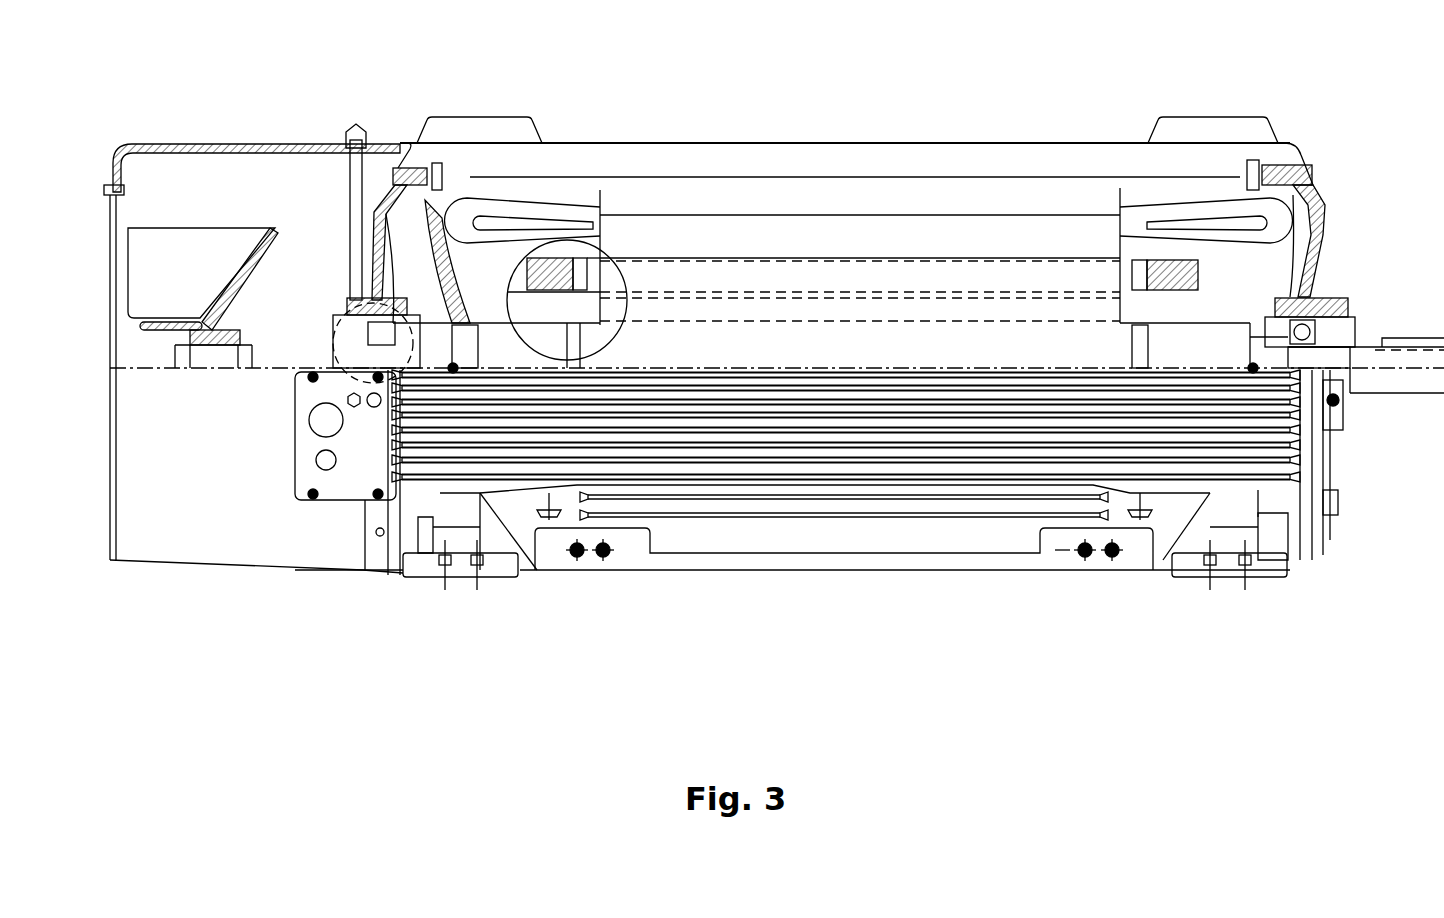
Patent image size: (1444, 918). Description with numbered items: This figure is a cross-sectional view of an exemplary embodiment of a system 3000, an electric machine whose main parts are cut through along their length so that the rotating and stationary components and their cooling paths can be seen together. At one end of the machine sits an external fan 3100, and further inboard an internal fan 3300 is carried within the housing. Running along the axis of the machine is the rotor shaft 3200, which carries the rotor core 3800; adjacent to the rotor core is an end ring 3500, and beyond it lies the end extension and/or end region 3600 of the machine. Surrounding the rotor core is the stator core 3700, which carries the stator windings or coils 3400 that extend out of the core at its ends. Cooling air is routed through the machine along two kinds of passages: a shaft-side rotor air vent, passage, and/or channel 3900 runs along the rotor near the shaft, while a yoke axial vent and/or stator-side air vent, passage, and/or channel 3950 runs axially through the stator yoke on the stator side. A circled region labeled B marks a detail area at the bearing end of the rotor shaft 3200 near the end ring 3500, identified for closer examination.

The system 3000 is at (300, 48).
The external fan 3100 is at (183, 270).
The rotor shaft 3200 is at (290, 357).
The internal fan 3300 is at (413, 218).
The stator windings or coils 3400 is at (482, 203).
The end ring 3500 is at (556, 265).
The end extension and/or end region 3600 is at (584, 263).
The stator core 3700 is at (715, 230).
The rotor core 3800 is at (774, 272).
The shaft-side rotor air vent, passage, and/or channel 3900 is at (927, 307).
The yoke axial vent and/or stator-side air vent, passage, and/or channel 3950 is at (1078, 190).
The detail region B is at (598, 240).